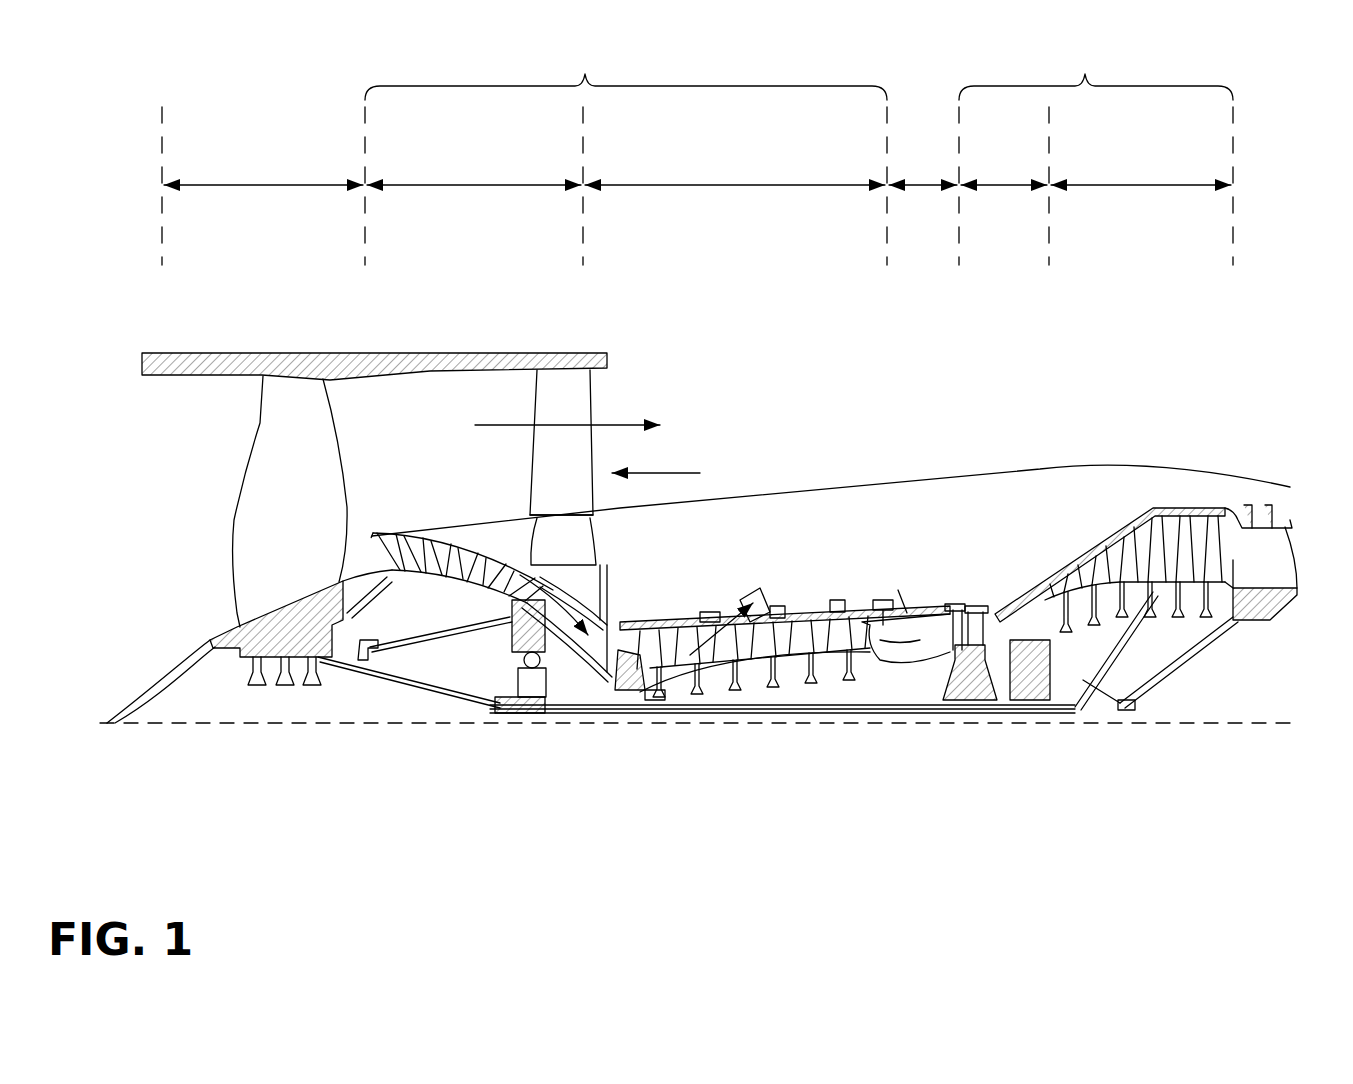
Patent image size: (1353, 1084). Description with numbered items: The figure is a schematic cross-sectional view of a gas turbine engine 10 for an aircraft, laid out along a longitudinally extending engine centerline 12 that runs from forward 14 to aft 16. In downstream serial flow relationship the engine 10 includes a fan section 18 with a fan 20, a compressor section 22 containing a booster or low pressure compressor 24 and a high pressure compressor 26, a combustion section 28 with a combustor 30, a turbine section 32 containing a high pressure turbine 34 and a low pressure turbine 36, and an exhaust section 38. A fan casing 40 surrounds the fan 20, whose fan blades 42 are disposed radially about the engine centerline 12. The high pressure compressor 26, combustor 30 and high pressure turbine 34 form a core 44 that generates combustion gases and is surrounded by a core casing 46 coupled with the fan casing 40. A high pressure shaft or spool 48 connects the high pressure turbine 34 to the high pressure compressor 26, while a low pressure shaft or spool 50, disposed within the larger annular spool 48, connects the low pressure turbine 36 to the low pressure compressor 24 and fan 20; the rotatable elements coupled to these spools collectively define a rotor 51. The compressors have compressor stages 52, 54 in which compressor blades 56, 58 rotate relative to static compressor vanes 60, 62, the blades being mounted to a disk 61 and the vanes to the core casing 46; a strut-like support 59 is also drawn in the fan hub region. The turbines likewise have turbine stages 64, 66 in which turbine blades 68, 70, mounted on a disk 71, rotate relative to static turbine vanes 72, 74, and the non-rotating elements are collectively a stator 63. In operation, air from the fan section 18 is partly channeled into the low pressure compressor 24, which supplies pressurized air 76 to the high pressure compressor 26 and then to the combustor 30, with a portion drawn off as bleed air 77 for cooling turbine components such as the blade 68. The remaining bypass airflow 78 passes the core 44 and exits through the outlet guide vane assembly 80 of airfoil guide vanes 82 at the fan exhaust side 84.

The gas turbine engine 10 is at (912, 343).
The engine centerline 12 is at (265, 726).
The forward 14 is at (135, 490).
The aft 16 is at (1343, 574).
The fan section 18 is at (263, 173).
The fan 20 is at (200, 563).
The compressor section 22 is at (626, 72).
The low pressure compressor 24 is at (474, 173).
The high pressure compressor 26 is at (735, 173).
The combustion section 28 is at (923, 168).
The combustor 30 is at (925, 630).
The turbine section 32 is at (1096, 72).
The high pressure turbine 34 is at (1004, 170).
The low pressure turbine 36 is at (1141, 173).
The exhaust section 38 is at (1312, 525).
The fan casing 40 is at (284, 367).
The fan blades 42 is at (318, 423).
The core 44 is at (866, 525).
The core casing 46 is at (1182, 510).
The HP shaft or spool 48 is at (900, 695).
The LP shaft or spool 50 is at (516, 692).
The rotor 51 is at (466, 590).
The compressor stages of the LP compressor 52 is at (455, 521).
The compressor stages of the HP compressor 54 is at (783, 610).
The compressor blades of the LP compressor 56 is at (463, 541).
The compressor blades of the HP compressor 58 is at (751, 639).
The fan frame strut 59 is at (400, 578).
The static compressor vanes of the LP compressor 60 is at (382, 532).
The disk 61 is at (660, 692).
The static compressor vanes of the HP compressor 62 is at (640, 645).
The stator 63 is at (637, 677).
The turbine stages of the HP turbine 64 is at (982, 577).
The turbine stages of the LP turbine 66 is at (1110, 551).
The turbine blades of the HP turbine 68 is at (955, 527).
The turbine blades of the LP turbine 70 is at (1075, 555).
The disk 71 is at (975, 668).
The static turbine vanes of the HP turbine 72 is at (955, 604).
The static turbine vanes of the LP turbine 74 is at (1060, 560).
The pressurized air 76 is at (587, 587).
The bleed air 77 is at (742, 614).
The bypass airflow 78 is at (498, 420).
The outlet guide vane assembly 80 is at (667, 466).
The airfoil guide vanes 82 is at (545, 463).
The fan exhaust side 84 is at (637, 383).